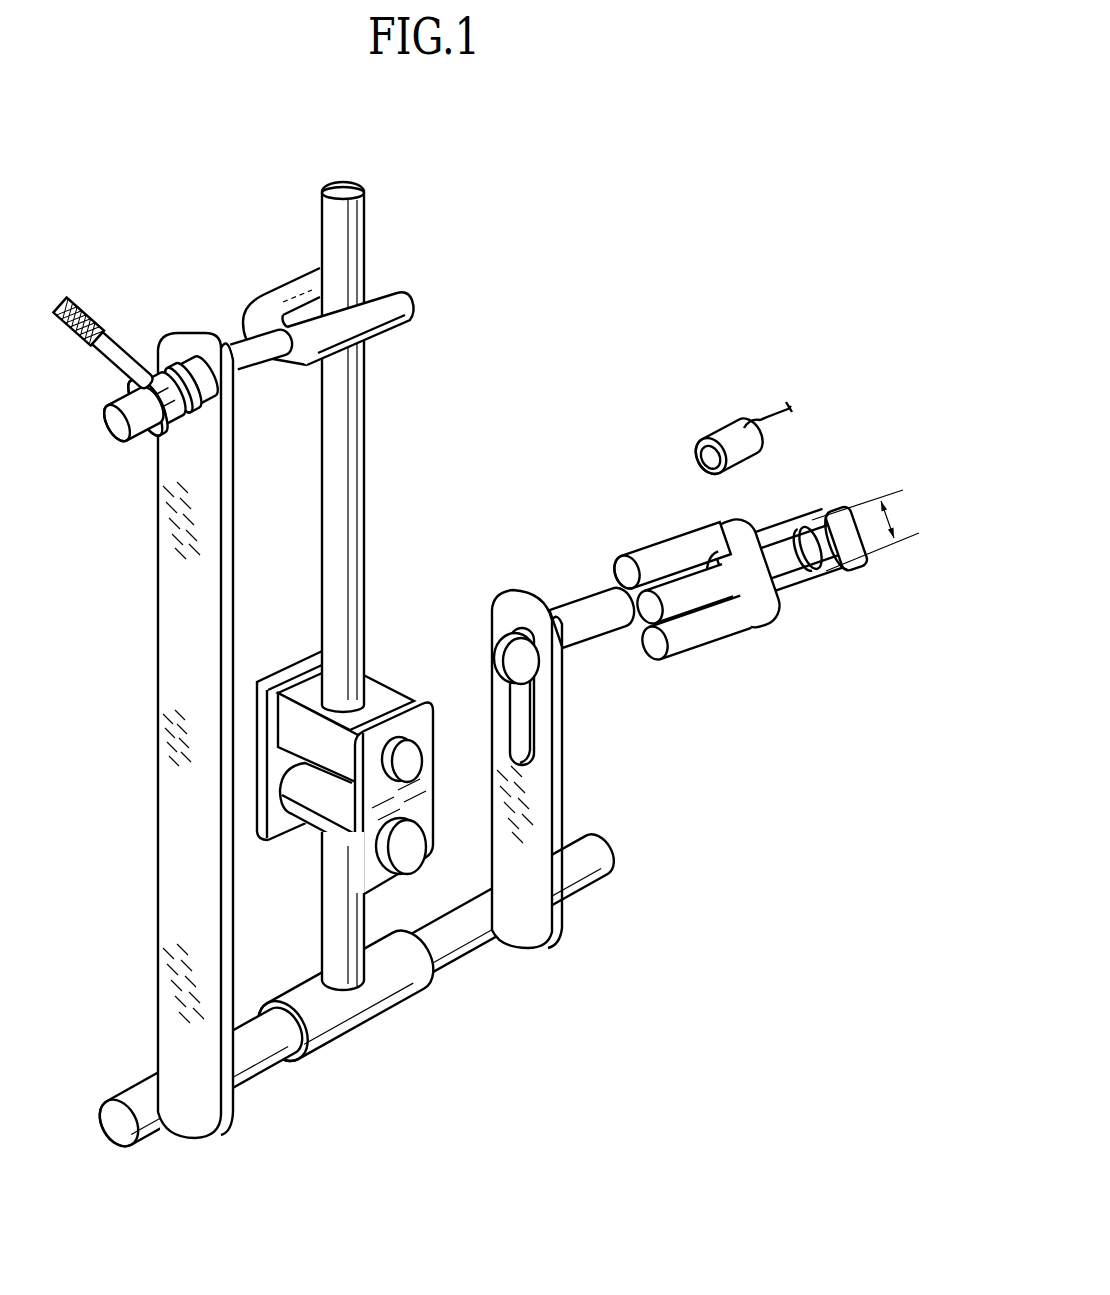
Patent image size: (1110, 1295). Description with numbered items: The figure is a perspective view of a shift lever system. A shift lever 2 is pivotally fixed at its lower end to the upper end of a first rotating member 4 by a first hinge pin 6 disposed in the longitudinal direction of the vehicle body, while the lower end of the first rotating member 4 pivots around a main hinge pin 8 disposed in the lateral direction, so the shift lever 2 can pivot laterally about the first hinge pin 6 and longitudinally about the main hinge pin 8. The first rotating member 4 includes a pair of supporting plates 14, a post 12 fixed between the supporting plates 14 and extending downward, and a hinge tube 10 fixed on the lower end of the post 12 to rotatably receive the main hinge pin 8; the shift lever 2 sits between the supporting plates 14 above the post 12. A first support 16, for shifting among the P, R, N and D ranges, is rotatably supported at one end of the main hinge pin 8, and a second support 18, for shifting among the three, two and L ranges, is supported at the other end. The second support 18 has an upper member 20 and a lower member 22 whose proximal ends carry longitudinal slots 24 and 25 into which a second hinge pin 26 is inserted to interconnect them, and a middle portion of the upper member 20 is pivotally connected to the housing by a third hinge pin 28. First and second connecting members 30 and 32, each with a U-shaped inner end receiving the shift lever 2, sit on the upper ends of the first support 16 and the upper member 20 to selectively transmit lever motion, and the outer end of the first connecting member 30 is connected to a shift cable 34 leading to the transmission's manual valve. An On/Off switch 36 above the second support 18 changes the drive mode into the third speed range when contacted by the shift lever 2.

The shift lever 2 is at (316, 197).
The first rotating member 4 is at (433, 868).
The first hinge pin 6 is at (410, 756).
The main hinge pin 8 is at (253, 1058).
The hinge tube 10 is at (382, 998).
The post 12 is at (330, 923).
The supporting plates 14 is at (275, 773).
The first support 16 is at (158, 541).
The second support 18 is at (668, 779).
The upper member 20 is at (710, 593).
The lower member 22 is at (546, 818).
The longitudinal slot 24 is at (527, 707).
The longitudinal slot 25 is at (586, 625).
The second hinge pin 26 is at (510, 652).
The third hinge pin 28 is at (640, 640).
The first connecting member 30 is at (280, 284).
The second connecting member 32 is at (684, 521).
The shift cable 34 is at (88, 328).
The On/Off switch 36 is at (708, 416).